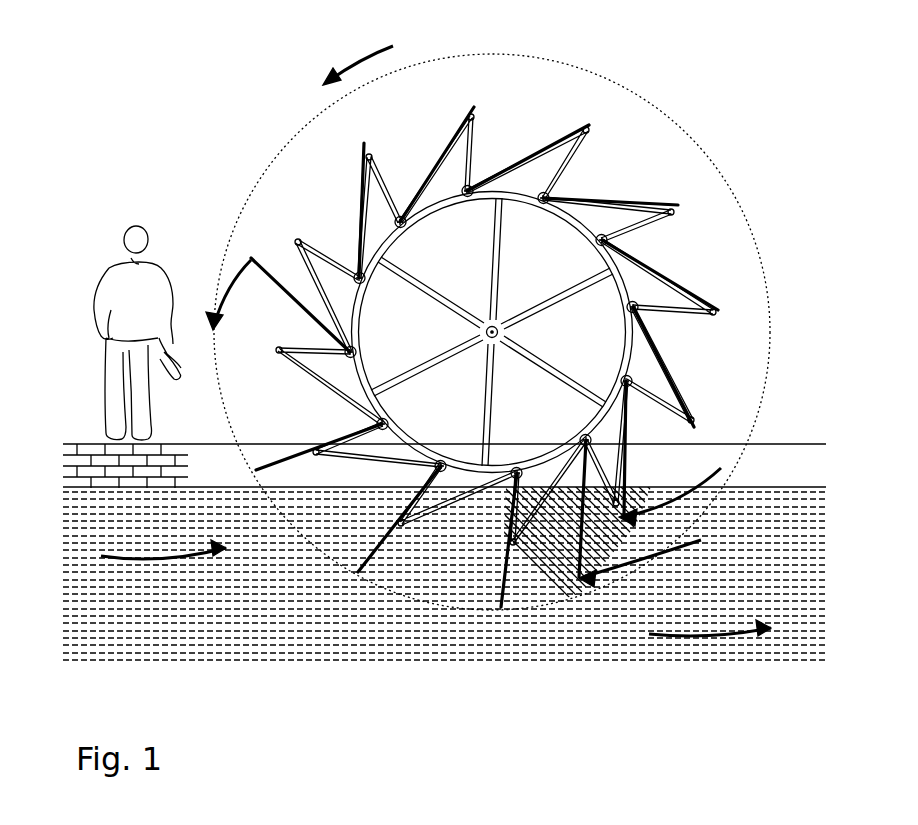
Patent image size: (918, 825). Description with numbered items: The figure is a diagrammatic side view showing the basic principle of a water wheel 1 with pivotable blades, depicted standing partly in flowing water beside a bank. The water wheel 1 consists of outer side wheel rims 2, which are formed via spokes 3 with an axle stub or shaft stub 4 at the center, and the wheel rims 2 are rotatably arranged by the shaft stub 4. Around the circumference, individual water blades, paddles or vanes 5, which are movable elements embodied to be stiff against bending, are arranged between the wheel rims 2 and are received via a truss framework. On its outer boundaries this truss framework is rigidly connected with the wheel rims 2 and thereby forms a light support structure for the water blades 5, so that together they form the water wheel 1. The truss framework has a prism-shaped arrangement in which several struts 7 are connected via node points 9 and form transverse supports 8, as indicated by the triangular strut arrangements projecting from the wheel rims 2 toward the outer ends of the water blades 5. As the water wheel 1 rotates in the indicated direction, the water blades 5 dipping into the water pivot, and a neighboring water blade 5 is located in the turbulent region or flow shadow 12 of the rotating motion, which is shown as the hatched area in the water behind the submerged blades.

The water wheel 1 is at (246, 186).
The wheel rim 2 is at (618, 285).
The spoke 3 is at (498, 267).
The shaft stub 4 is at (497, 343).
The water blade 5 is at (543, 148).
The strut 7 is at (307, 348).
The transverse support 8 is at (383, 160).
The node point 9 is at (357, 350).
The flow shadow 12 is at (545, 598).